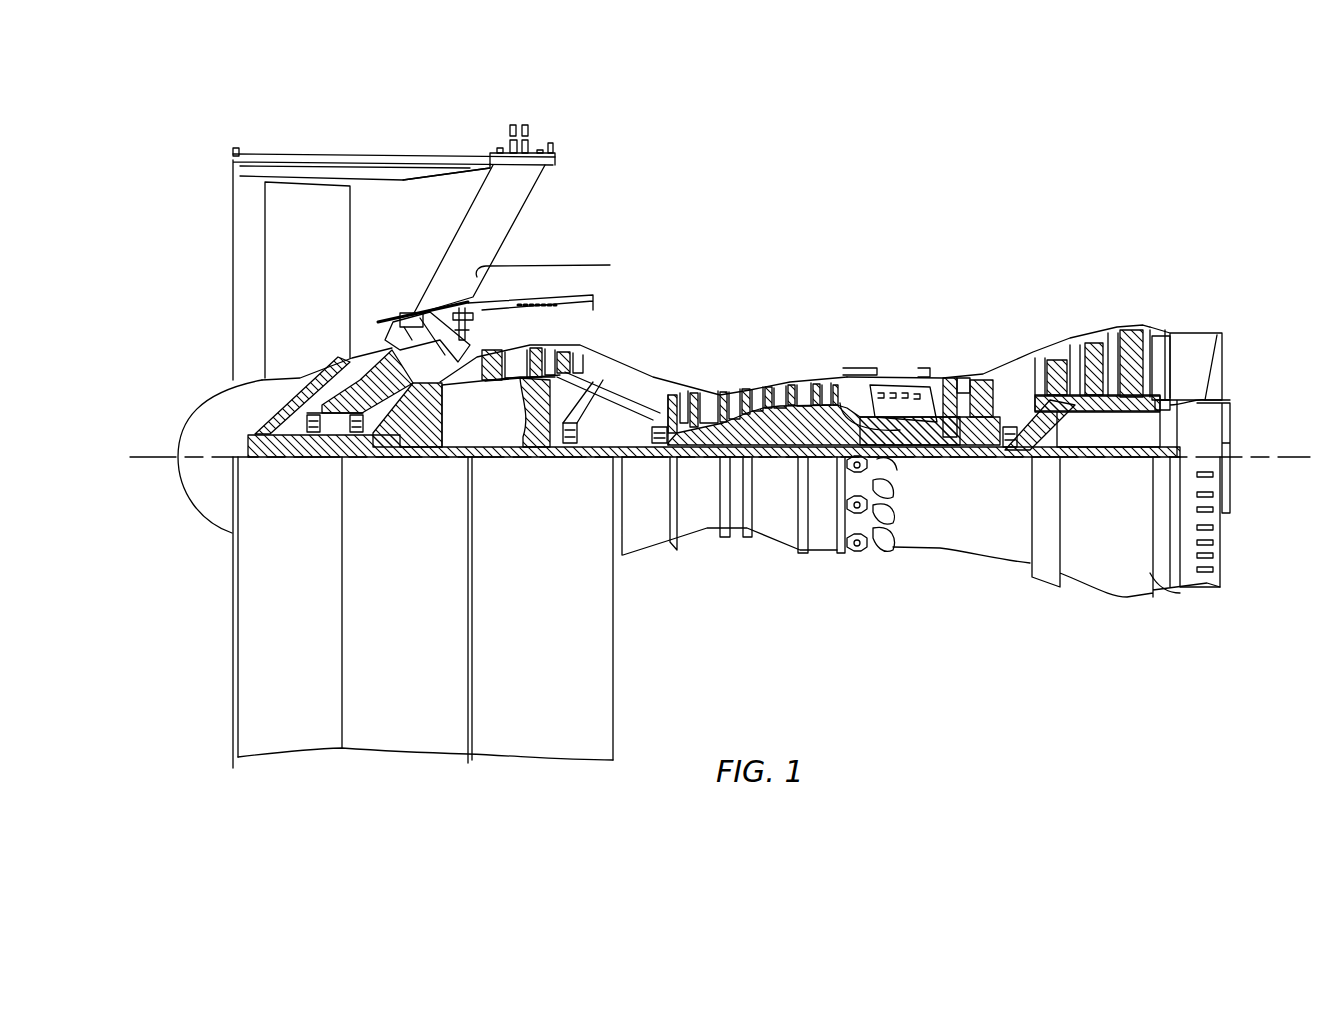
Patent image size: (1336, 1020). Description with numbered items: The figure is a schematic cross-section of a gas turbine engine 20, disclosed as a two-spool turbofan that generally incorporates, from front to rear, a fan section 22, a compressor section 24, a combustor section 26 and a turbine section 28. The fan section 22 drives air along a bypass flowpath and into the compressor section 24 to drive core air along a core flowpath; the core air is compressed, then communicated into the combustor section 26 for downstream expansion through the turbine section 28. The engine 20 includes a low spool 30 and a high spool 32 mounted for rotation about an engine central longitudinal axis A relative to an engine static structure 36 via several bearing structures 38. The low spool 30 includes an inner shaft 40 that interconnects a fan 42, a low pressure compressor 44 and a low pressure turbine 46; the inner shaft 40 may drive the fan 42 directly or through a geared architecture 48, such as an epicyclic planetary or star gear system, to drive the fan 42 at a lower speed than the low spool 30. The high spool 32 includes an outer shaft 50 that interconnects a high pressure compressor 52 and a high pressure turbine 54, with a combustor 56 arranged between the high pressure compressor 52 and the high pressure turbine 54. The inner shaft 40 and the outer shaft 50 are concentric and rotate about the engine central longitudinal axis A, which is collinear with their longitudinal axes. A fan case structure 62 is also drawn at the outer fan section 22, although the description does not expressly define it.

The gas turbine engine 20 is at (935, 181).
The fan section 22 is at (468, 136).
The compressor section 24 is at (480, 276).
The combustor section 26 is at (950, 276).
The turbine section 28 is at (1163, 276).
The low spool 30 is at (785, 468).
The high spool 32 is at (816, 415).
The engine static structure 36 is at (828, 563).
The bearing structures 38 is at (318, 447).
The inner shaft 40 is at (637, 460).
The fan 42 is at (322, 320).
The low pressure compressor 44 is at (545, 356).
The low pressure turbine 46 is at (1100, 338).
The geared architecture 48 is at (430, 447).
The outer shaft 50 is at (905, 458).
The high pressure compressor 52 is at (765, 435).
The high pressure turbine 54 is at (962, 376).
The combustor 56 is at (910, 382).
The fan case 62 is at (470, 165).
The engine central longitudinal axis A is at (1272, 455).